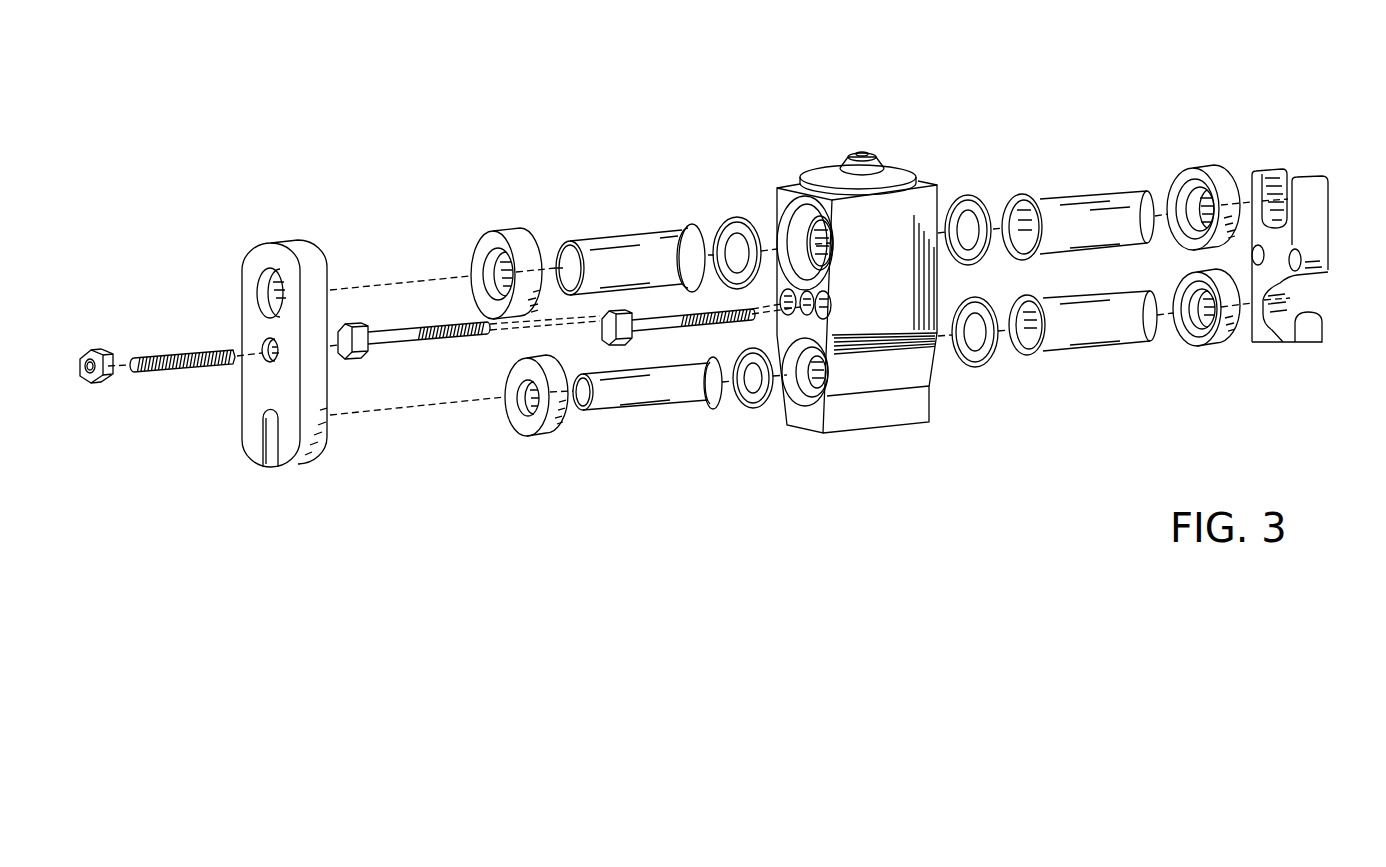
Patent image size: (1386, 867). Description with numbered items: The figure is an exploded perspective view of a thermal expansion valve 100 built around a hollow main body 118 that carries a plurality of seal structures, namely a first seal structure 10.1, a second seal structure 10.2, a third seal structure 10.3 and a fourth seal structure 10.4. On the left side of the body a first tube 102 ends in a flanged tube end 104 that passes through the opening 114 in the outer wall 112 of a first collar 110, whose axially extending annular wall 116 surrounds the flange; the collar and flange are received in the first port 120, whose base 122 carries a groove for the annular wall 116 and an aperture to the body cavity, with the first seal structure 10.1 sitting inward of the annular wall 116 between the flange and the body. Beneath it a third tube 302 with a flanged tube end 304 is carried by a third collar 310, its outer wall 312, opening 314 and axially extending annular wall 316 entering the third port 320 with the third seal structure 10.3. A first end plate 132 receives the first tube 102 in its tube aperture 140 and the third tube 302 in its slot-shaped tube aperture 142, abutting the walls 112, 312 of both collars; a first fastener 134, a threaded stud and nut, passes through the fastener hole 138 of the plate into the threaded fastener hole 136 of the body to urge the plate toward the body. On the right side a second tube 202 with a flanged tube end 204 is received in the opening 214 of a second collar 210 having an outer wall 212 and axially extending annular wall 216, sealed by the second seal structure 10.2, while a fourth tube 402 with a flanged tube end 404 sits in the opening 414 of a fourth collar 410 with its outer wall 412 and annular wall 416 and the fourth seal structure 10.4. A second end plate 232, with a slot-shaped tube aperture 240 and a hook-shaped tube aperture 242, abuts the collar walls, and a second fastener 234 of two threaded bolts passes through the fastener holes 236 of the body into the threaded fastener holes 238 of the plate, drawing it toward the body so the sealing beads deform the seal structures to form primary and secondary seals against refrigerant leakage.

The thermal expansion valve 100 is at (903, 95).
The first tube 102 is at (630, 229).
The flanged tube end 104 is at (690, 226).
The first seal structure 10.1 is at (733, 220).
The second seal structure 10.2 is at (966, 196).
The third seal structure 10.3 is at (750, 407).
The fourth seal structure 10.4 is at (975, 368).
The first collar 110 is at (505, 241).
The outer wall 112 is at (493, 238).
The opening 114 is at (488, 276).
The axially extending annular wall 116 is at (534, 255).
The hollow main body 118 is at (907, 227).
The first port 120 is at (842, 304).
The base 122 is at (822, 277).
The first end plate 132 is at (248, 354).
The first fastener 134 is at (91, 345).
The threaded fastener hole 136 is at (800, 305).
The fastener hole 138 is at (264, 358).
The tube aperture 140 is at (262, 282).
The tube aperture 142 is at (272, 456).
The second tube 202 is at (1078, 201).
The flanged tube end 204 is at (1012, 194).
The second collar 210 is at (1207, 184).
The outer wall 212 is at (1230, 186).
The opening 214 is at (1185, 238).
The axially extending annular wall 216 is at (1208, 174).
The second end plate 232 is at (1319, 276).
The second fastener 234 is at (392, 333).
The fastener holes 236 is at (812, 300).
The threaded fastener holes 238 is at (1297, 262).
The tube aperture 240 is at (1288, 188).
The tube aperture 242 is at (1320, 326).
The third tube 302 is at (647, 414).
The flanged tube end 304 is at (708, 406).
The third collar 310 is at (541, 427).
The outer wall 312 is at (520, 427).
The opening 314 is at (517, 400).
The axially extending annular wall 316 is at (563, 425).
The third port 320 is at (803, 405).
The fourth tube 402 is at (1083, 352).
The flanged tube end 404 is at (1030, 358).
The fourth collar 410 is at (1196, 354).
The outer wall 412 is at (1226, 327).
The opening 414 is at (1186, 338).
The axially extending annular wall 416 is at (1213, 348).